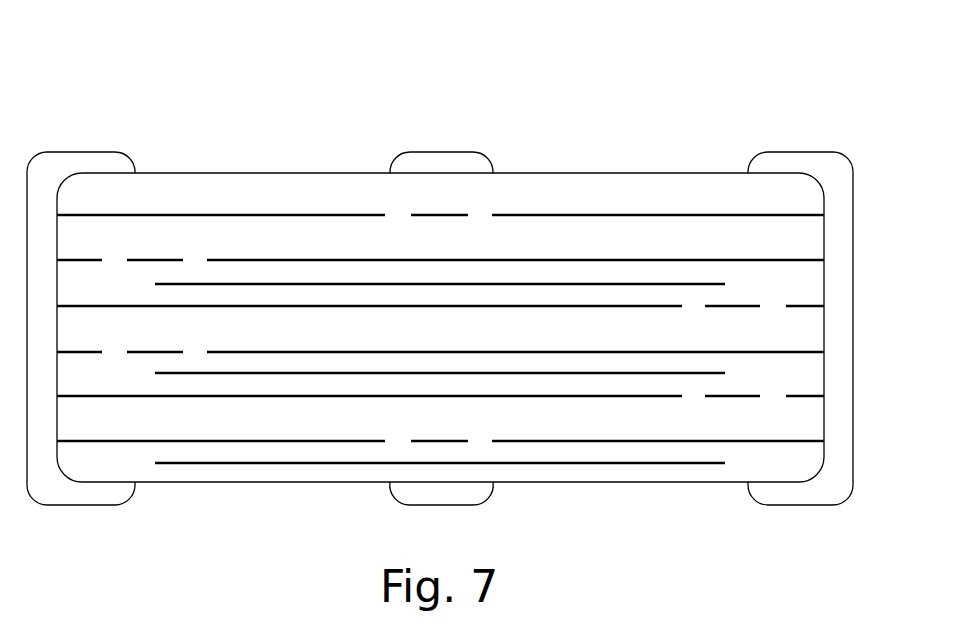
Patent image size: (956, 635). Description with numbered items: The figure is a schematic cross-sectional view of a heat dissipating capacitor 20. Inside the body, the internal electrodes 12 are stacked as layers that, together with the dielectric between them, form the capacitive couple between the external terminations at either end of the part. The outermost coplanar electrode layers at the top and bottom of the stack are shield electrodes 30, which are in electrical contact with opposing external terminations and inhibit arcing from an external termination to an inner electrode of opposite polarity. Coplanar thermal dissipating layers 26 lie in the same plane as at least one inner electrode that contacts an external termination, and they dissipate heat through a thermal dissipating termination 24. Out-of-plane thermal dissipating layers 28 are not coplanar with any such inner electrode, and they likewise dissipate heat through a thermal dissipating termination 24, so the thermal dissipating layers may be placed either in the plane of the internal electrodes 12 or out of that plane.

The heat dissipating capacitor 20 is at (803, 135).
The internal electrodes 12 is at (603, 306).
The thermal dissipating termination 24 is at (462, 167).
The coplanar thermal dissipating layers 26 is at (153, 260).
The out-of-plane thermal dissipating layers 28 is at (557, 463).
The shield electrodes 30 is at (100, 214).